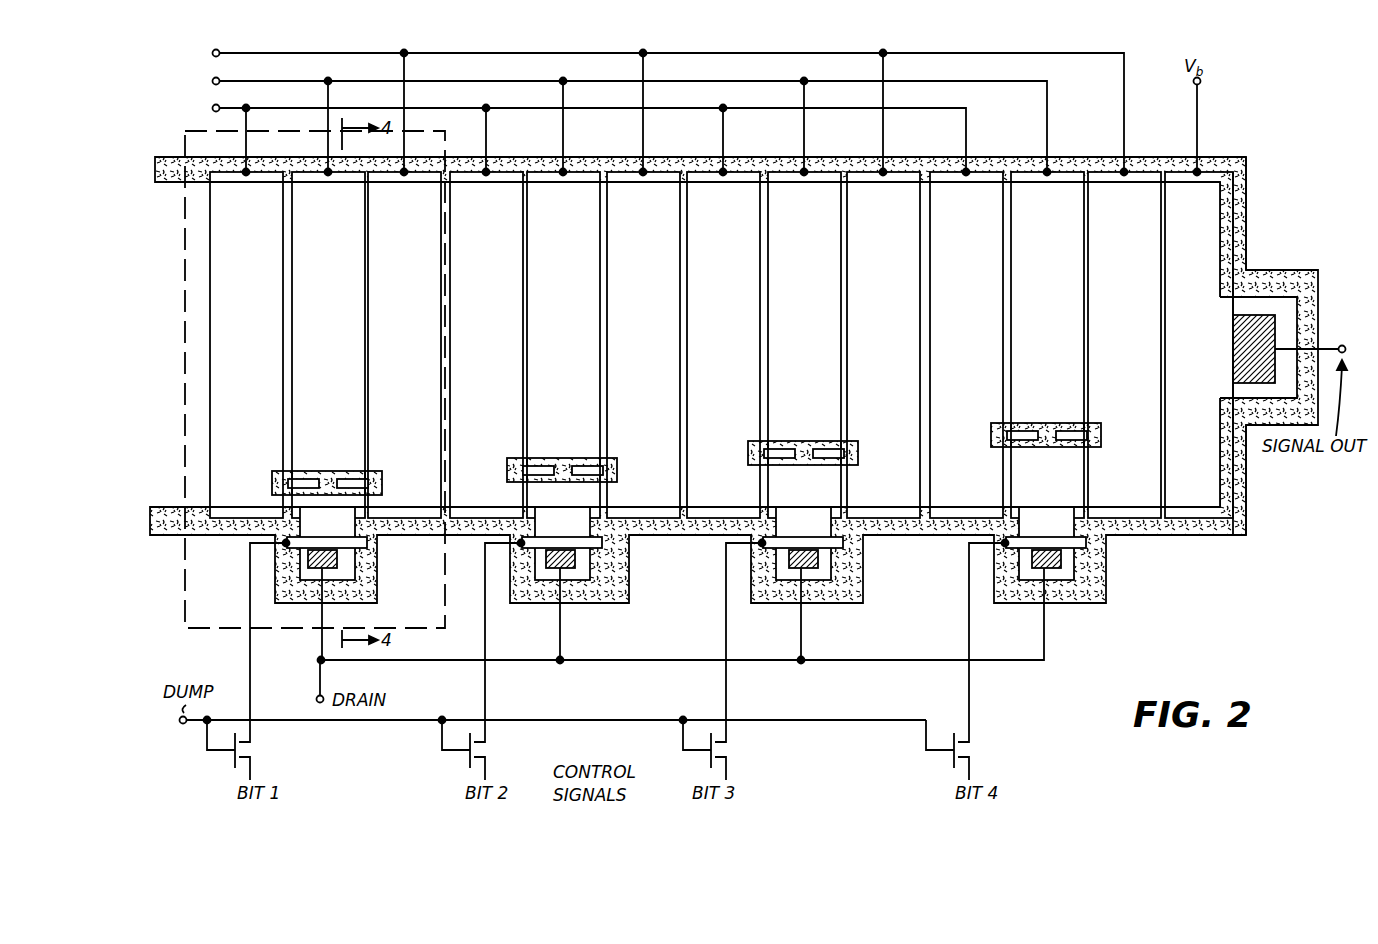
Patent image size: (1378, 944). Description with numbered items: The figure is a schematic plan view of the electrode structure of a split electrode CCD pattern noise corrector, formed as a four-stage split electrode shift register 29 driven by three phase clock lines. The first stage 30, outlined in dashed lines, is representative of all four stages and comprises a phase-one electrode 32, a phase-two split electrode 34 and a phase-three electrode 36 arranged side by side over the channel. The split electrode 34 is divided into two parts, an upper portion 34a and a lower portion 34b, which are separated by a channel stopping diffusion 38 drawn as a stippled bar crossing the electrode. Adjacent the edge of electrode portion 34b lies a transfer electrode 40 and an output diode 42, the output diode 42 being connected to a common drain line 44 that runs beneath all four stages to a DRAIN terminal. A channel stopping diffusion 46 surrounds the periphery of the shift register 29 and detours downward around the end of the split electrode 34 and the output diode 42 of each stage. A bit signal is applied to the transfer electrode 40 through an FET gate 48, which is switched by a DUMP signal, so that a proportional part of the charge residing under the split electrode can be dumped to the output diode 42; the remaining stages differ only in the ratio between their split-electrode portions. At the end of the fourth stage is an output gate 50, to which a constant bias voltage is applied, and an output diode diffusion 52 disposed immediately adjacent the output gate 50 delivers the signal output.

The split electrode shift register 29 is at (1136, 56).
The first stage 30 is at (216, 632).
The phase-one electrode 32 is at (254, 355).
The phase-two split electrode 34 is at (251, 376).
The split-electrode portion 34a is at (338, 343).
The split-electrode portion 34b is at (327, 513).
The phase-three electrode 36 is at (414, 340).
The channel stopping diffusion 38 is at (374, 472).
The transfer electrode 40 is at (368, 548).
The output diode 42 is at (338, 567).
The drain line 44 is at (436, 660).
The channel stopping diffusion 46 is at (173, 533).
The FET gate 48 is at (216, 765).
The output gate 50 is at (1207, 224).
The output diode diffusion 52 is at (1261, 314).